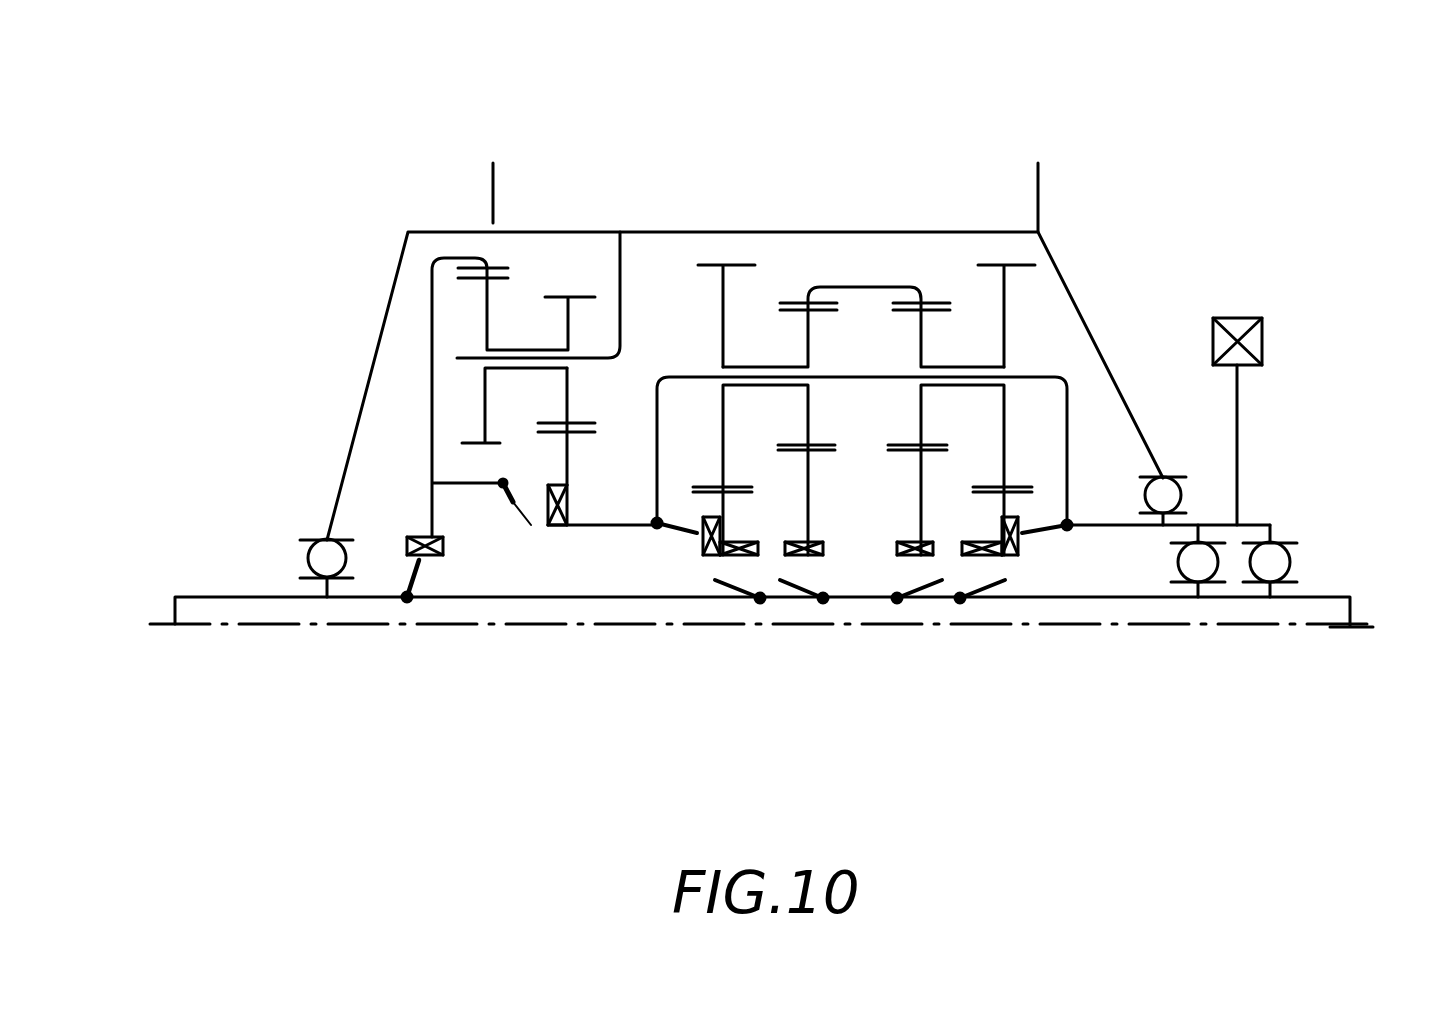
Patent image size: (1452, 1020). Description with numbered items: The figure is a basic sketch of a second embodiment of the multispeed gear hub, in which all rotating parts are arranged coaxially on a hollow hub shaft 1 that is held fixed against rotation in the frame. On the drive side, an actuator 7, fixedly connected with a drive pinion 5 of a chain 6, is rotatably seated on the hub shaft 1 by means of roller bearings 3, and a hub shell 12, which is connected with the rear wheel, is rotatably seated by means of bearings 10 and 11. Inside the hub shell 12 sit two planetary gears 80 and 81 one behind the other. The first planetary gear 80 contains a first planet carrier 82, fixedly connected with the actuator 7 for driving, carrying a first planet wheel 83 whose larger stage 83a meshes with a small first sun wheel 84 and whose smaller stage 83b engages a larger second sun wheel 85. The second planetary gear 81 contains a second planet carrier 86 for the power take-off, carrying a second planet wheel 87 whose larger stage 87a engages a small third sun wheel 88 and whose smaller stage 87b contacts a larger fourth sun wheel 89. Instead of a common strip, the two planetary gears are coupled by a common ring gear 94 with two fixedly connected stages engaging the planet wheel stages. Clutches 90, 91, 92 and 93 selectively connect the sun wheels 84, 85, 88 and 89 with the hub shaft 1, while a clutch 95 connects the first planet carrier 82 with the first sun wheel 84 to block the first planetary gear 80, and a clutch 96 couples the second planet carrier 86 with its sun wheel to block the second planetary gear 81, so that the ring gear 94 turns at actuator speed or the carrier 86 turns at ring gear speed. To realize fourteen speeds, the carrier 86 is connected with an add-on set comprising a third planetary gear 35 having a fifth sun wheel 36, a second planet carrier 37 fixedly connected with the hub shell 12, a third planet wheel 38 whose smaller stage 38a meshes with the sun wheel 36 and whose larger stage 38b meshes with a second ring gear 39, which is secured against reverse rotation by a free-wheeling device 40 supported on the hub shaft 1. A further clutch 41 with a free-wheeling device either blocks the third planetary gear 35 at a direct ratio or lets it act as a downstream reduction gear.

The hub shaft 1 is at (1323, 612).
The roller bearings 3 is at (1270, 562).
The drive pinion 5 is at (1237, 412).
The chain 6 is at (1240, 328).
The actuator 7 is at (1120, 525).
The bearing 10 is at (1167, 497).
The bearing 11 is at (317, 557).
The hub shell 12 is at (702, 233).
The third planetary gear 35 is at (541, 218).
The fifth sun wheel 36 is at (567, 478).
The second planet carrier 37 is at (620, 268).
The third planet wheel 38 is at (530, 348).
The planet wheel stage 38a is at (567, 390).
The planet wheel stage 38b is at (485, 398).
The second ring gear 39 is at (432, 350).
The free-wheeling device 40 is at (443, 556).
The clutch 41 is at (518, 520).
The first planetary gear 80 is at (962, 226).
The second planetary gear 81 is at (812, 232).
The first planet carrier 82 is at (1052, 377).
The first planet wheel 83 is at (975, 363).
The planet wheel stage 83a is at (1004, 442).
The planet wheel stage 83b is at (921, 327).
The first sun wheel 84 is at (1004, 507).
The second sun wheel 85 is at (921, 510).
The second planet carrier 86 is at (695, 377).
The second planet wheel 87 is at (773, 365).
The planet wheel stage 87a is at (723, 315).
The planet wheel stage 87b is at (808, 418).
The third sun wheel 88 is at (721, 512).
The fourth sun wheel 89 is at (808, 477).
The clutch 90 is at (988, 603).
The clutch 91 is at (913, 603).
The clutch 92 is at (808, 605).
The clutch 93 is at (742, 603).
The common ring gear 94 is at (865, 287).
The clutch 95 is at (1050, 537).
The clutch 96 is at (672, 530).